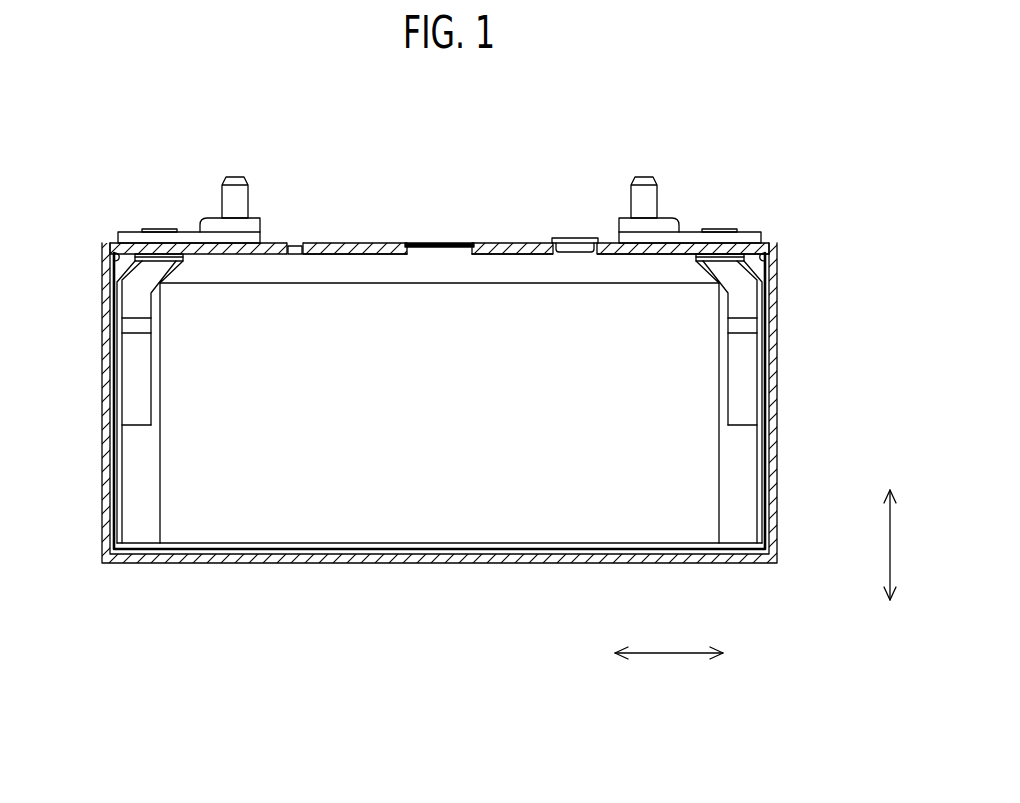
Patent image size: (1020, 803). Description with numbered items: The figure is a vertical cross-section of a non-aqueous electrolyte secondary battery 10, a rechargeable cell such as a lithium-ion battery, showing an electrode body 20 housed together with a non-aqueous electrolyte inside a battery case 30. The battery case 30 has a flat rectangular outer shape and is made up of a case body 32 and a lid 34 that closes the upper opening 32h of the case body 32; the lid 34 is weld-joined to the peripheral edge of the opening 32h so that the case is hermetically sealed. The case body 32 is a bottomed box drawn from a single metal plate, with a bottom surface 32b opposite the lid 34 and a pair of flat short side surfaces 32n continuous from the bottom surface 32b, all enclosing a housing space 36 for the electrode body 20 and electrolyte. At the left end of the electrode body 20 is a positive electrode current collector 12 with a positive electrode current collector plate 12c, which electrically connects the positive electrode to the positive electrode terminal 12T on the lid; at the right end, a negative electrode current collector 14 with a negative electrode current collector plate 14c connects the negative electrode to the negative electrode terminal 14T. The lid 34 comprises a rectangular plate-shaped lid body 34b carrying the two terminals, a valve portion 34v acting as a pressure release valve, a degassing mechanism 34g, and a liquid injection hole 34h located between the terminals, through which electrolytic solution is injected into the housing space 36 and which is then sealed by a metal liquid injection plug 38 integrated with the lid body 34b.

The non-aqueous electrolyte secondary battery 10 is at (711, 161).
The positive electrode current collector 12 is at (135, 517).
The positive electrode terminal 12T is at (231, 177).
The positive electrode current collector plate 12c is at (135, 383).
The negative electrode current collector 14 is at (745, 492).
The negative electrode terminal 14T is at (644, 177).
The negative electrode current collector plate 14c is at (737, 372).
The electrode body 20 is at (411, 482).
The battery case 30 is at (867, 180).
The case body 32 is at (779, 266).
The bottom surface 32b is at (263, 565).
The opening 32h is at (112, 258).
The short side surfaces 32n is at (102, 443).
The lid 34 is at (767, 242).
The lid body 34b is at (517, 243).
The degassing mechanism 34g is at (299, 227).
The liquid injection hole 34h is at (556, 247).
The valve portion 34v is at (444, 229).
The housing space 36 is at (765, 540).
The liquid injection plug 38 is at (597, 239).